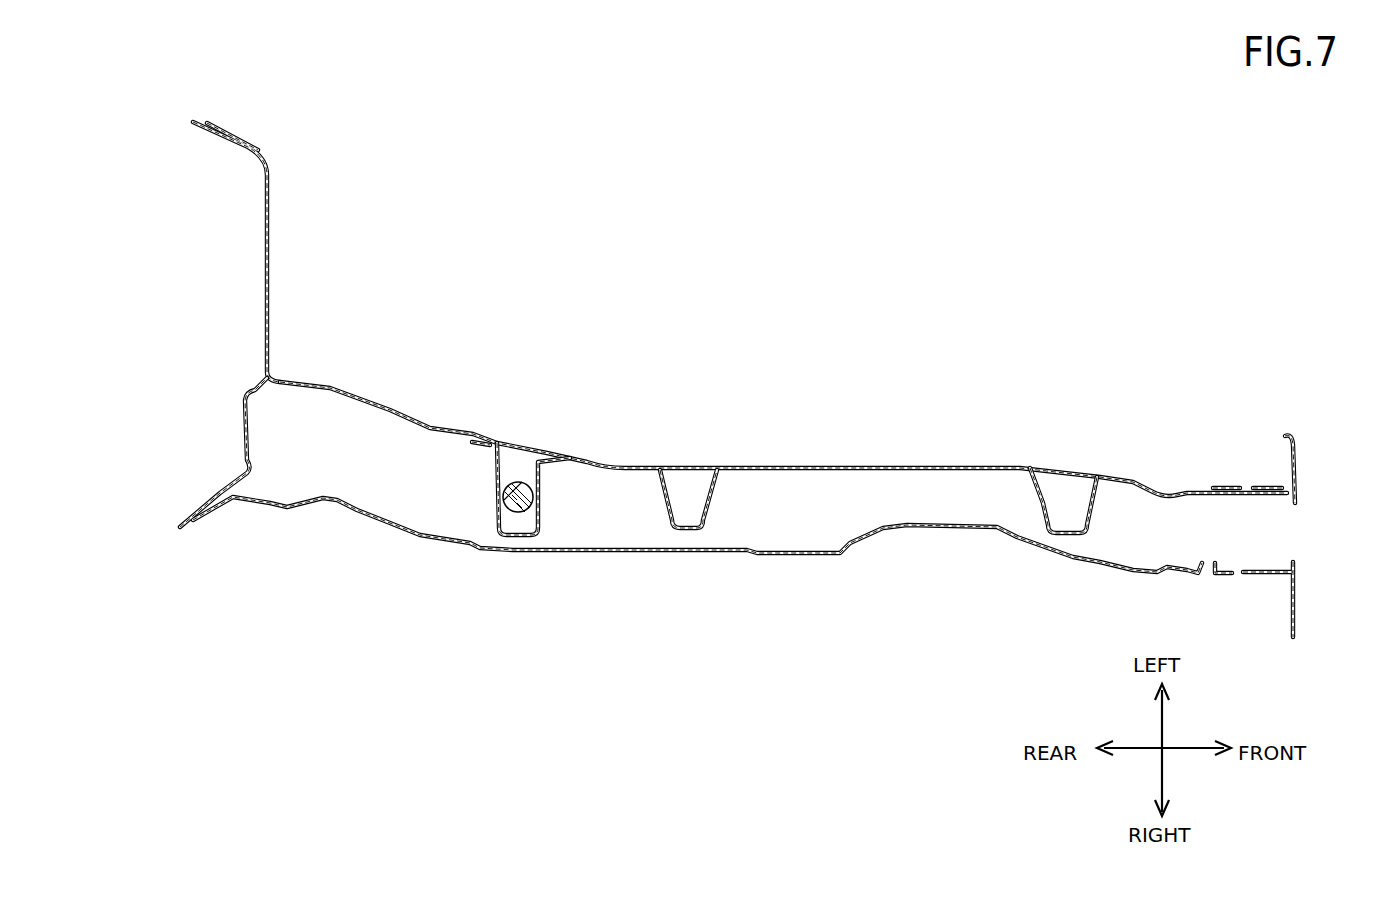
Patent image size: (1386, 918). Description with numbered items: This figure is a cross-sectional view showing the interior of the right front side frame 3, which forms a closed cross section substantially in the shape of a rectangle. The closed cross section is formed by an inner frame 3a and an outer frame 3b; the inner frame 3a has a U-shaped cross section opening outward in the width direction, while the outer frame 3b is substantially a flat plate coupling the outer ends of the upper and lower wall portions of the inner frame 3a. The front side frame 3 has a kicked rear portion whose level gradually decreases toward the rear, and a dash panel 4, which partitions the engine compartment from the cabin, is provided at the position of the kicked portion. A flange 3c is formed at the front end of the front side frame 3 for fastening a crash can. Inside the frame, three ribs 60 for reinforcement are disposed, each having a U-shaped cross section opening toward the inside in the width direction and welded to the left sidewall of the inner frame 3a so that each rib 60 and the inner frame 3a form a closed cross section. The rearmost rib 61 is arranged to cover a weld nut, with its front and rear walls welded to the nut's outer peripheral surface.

The front side frame 3 is at (774, 507).
The inner frame 3a is at (852, 464).
The outer frame 3b is at (808, 556).
The flange 3c is at (1298, 466).
The dash panel 4 is at (271, 268).
The rib 60 is at (715, 503).
The rearmost rib 61 is at (541, 510).